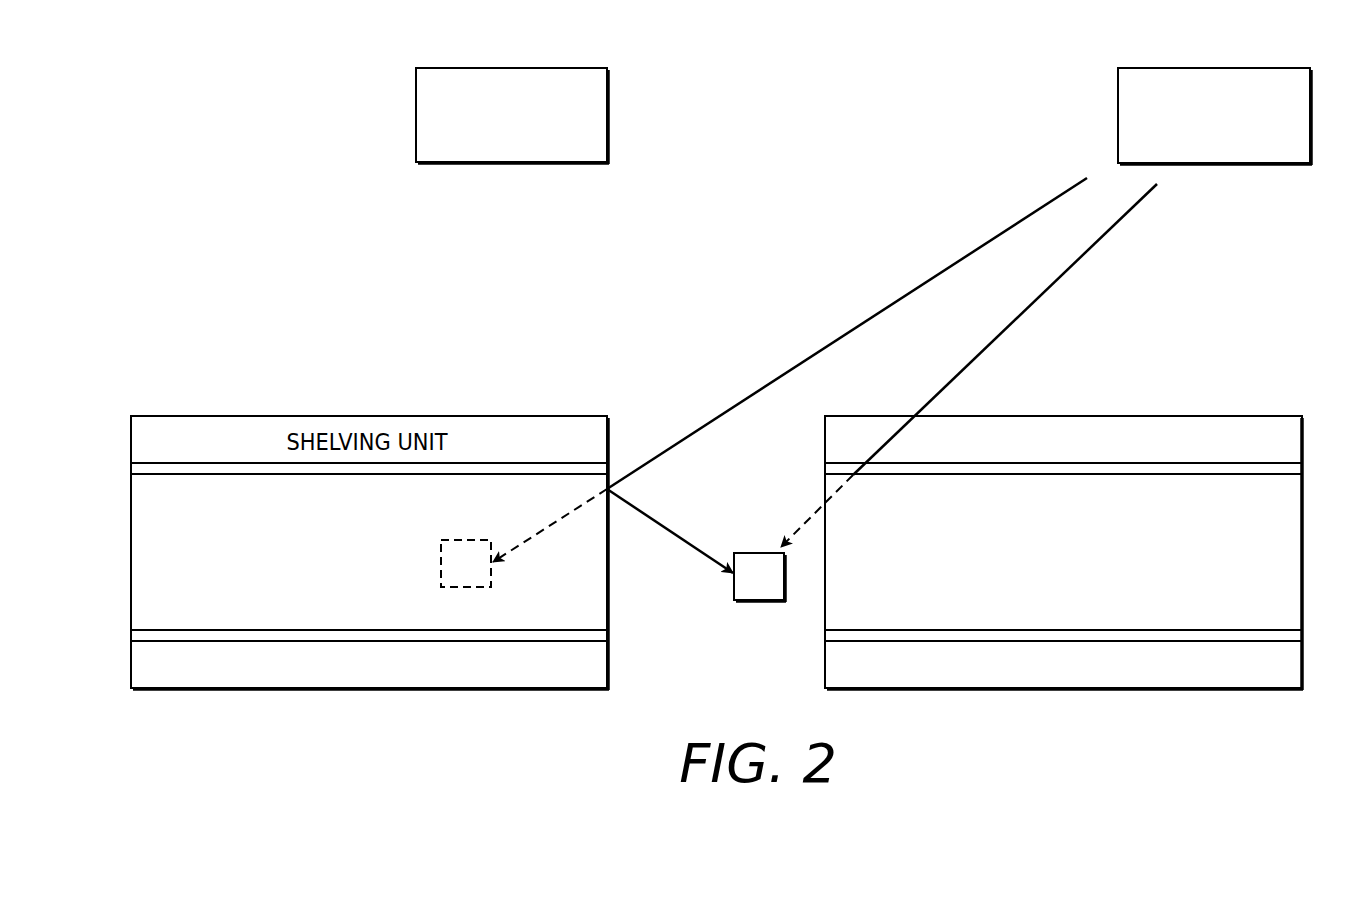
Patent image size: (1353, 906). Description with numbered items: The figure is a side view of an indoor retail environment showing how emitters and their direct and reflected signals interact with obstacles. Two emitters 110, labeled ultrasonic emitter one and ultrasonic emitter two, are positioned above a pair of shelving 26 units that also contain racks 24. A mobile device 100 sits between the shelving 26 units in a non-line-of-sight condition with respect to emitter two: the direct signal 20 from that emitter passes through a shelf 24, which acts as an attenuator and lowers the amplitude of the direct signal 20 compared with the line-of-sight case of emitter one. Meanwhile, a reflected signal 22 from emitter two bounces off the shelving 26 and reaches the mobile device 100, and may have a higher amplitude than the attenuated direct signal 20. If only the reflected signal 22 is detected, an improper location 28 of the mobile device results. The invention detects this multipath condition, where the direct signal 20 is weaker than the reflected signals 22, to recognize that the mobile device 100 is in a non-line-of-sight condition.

The emitter 110 is at (433, 67).
The reflected signal 22 is at (972, 255).
The direct signal 20 is at (1064, 277).
The shelving 26 is at (1283, 415).
The rack 24 is at (1147, 467).
The improper location 28 is at (454, 539).
The mobile device 100 is at (761, 602).